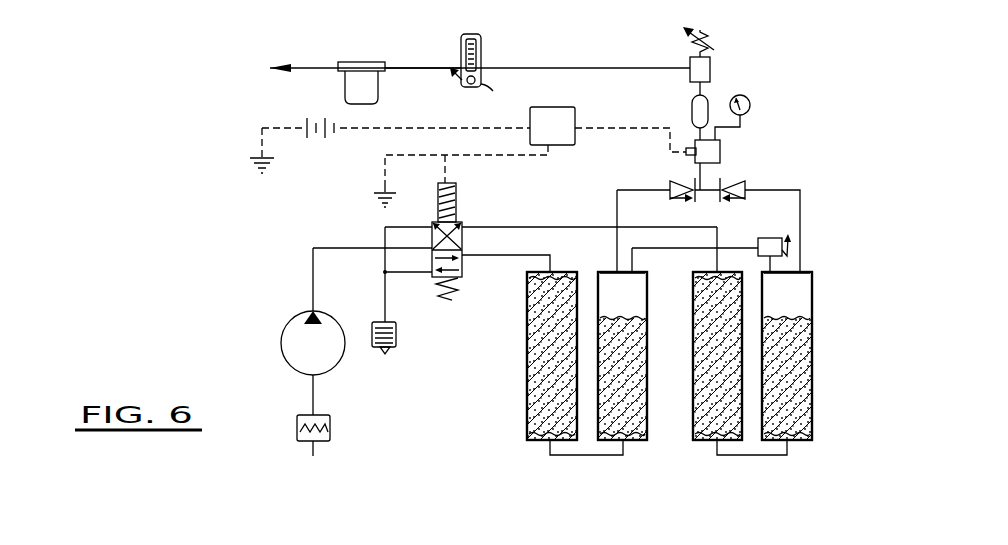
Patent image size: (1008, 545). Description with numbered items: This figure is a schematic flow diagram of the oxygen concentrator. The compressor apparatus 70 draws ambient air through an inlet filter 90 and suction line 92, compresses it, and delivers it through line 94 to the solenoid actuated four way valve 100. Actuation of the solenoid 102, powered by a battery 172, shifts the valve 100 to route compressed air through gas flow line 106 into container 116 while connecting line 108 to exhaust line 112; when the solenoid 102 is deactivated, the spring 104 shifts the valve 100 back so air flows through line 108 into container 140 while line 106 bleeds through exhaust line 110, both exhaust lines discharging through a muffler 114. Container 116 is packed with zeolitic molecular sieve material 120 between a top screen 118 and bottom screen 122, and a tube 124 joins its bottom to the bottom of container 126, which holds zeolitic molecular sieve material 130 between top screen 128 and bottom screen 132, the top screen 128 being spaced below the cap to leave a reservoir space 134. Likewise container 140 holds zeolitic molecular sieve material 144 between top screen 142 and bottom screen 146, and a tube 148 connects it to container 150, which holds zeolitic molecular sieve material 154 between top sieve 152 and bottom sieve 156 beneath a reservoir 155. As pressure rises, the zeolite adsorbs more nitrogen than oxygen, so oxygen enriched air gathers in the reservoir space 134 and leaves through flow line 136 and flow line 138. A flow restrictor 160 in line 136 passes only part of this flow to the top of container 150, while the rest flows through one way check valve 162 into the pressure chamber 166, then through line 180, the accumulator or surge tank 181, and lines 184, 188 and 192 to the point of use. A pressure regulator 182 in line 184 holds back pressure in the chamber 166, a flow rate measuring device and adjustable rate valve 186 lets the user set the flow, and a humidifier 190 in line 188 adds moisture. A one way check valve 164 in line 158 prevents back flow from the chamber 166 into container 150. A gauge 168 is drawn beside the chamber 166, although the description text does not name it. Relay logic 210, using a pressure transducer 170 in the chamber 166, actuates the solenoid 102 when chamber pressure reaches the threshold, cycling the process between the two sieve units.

The compressor apparatus 70 is at (290, 326).
The inlet filter 90 is at (300, 415).
The suction line 92 is at (311, 385).
The line 94 is at (310, 271).
The solenoid actuated four way valve 100 is at (462, 218).
The solenoid 102 is at (457, 190).
The spring 104 is at (460, 291).
The gas flow line 106 is at (534, 255).
The line 108 is at (537, 225).
The exhaust line 110 is at (405, 273).
The exhaust line 112 is at (385, 230).
The muffler 114 is at (397, 341).
The cylindrical container 116 is at (527, 372).
The top screen 118 is at (535, 292).
The zeolitic molecular sieve material 120 is at (547, 343).
The bottom screen 122 is at (550, 435).
The tube 124 is at (548, 449).
The cylindrical container 126 is at (648, 400).
The top screen 128 is at (635, 318).
The zeolitic molecular sieve material 130 is at (624, 361).
The bottom screen 132 is at (622, 430).
The reservoir space 134 is at (630, 293).
The flow line 136 is at (705, 250).
The flow line 138 is at (615, 190).
The cylindrical container 140 is at (703, 336).
The top screen 142 is at (710, 272).
The zeolitic molecular sieve material 144 is at (713, 375).
The bottom screen 146 is at (703, 438).
The tube 148 is at (790, 447).
The cylindrical container 150 is at (813, 346).
The top sieve 152 is at (797, 318).
The zeolitic molecular sieve material 154 is at (800, 373).
The reservoir 155 is at (797, 294).
The bottom sieve 156 is at (797, 420).
The line 158 is at (803, 203).
The flow restrictor 160 is at (774, 238).
The one way check valve 162 is at (676, 183).
The one way check valve 164 is at (745, 177).
The pressure chamber 166 is at (720, 152).
The pressure gauge 168 is at (750, 102).
The pressure transducer 170 is at (690, 147).
The battery 172 is at (307, 118).
The line 180 is at (703, 88).
The accumulator or surge tank 181 is at (696, 100).
The pressure regulator 182 is at (712, 67).
The line 184 is at (555, 66).
The flow rate measuring device and adjustable rate valve 186 is at (482, 42).
The line 188 is at (422, 66).
The humidifier 190 is at (378, 90).
The line 192 is at (310, 65).
The relay logic 210 is at (562, 107).